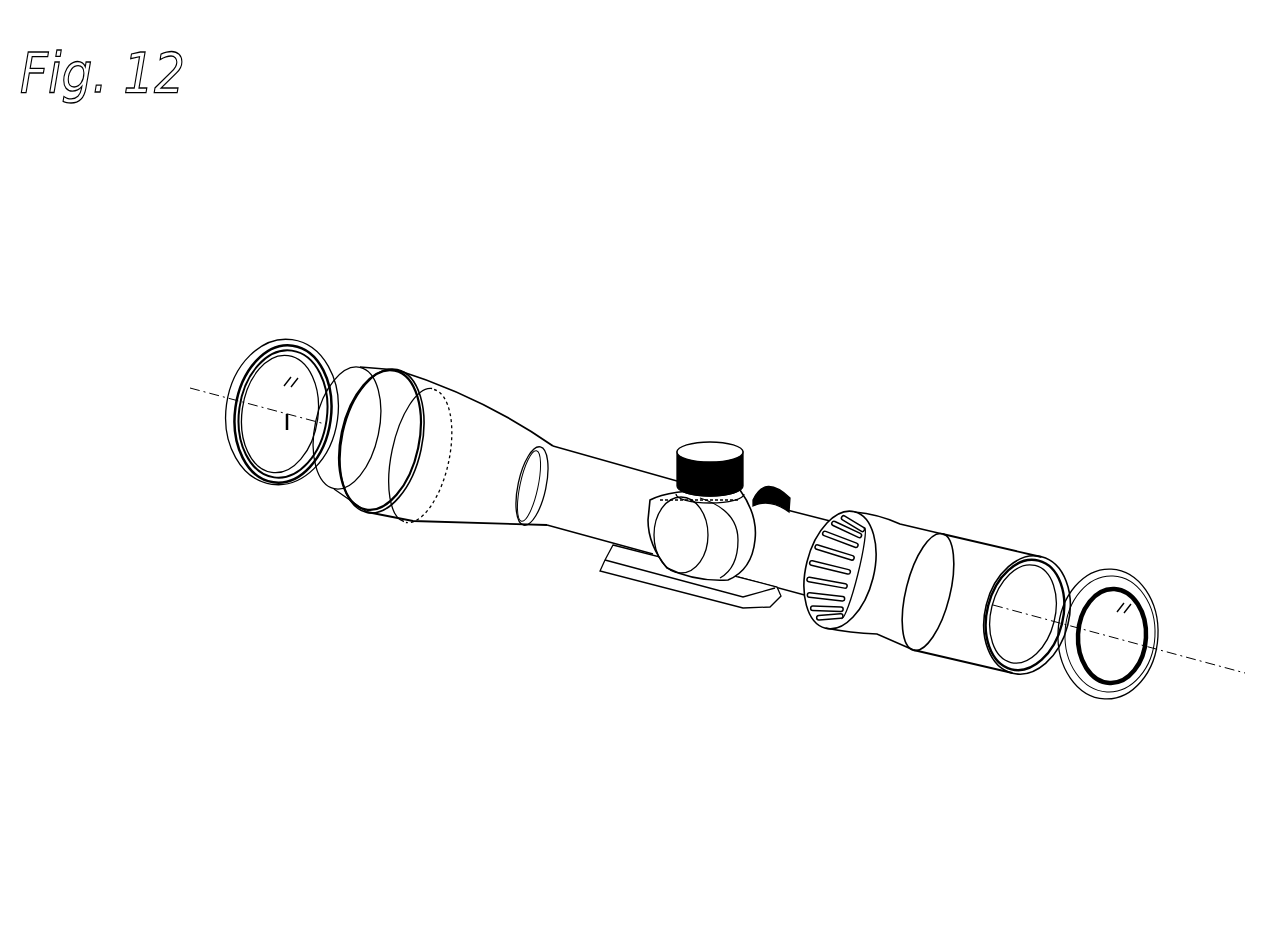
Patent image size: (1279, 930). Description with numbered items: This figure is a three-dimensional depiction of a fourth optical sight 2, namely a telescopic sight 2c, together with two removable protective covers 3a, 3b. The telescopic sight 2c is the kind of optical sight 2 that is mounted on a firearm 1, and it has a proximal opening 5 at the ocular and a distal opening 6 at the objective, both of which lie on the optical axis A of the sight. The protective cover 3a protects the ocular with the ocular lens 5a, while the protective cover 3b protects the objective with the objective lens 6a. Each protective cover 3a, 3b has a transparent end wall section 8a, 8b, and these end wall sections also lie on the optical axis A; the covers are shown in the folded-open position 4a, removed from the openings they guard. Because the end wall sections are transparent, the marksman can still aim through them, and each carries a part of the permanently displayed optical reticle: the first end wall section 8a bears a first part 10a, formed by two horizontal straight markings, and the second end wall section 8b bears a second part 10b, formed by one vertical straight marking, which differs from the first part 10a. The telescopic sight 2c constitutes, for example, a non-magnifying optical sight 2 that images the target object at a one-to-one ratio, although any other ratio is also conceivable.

The firearm 1 is at (657, 584).
The optical sight 2 is at (727, 442).
The telescopic sight 2c is at (587, 487).
The protective cover 3a is at (1103, 570).
The protective cover 3b is at (296, 337).
The folded-open position 4a is at (265, 317).
The proximal opening 5 is at (1038, 683).
The ocular lens 5a is at (1003, 672).
The distal opening 6 is at (319, 490).
The objective lens 6a is at (450, 520).
The transparent end wall section 8a is at (1142, 598).
The transparent end wall section 8b is at (324, 361).
The first part of the reticle 10a is at (1110, 698).
The second part of the reticle 10b is at (232, 372).
The optical axis A is at (1215, 663).